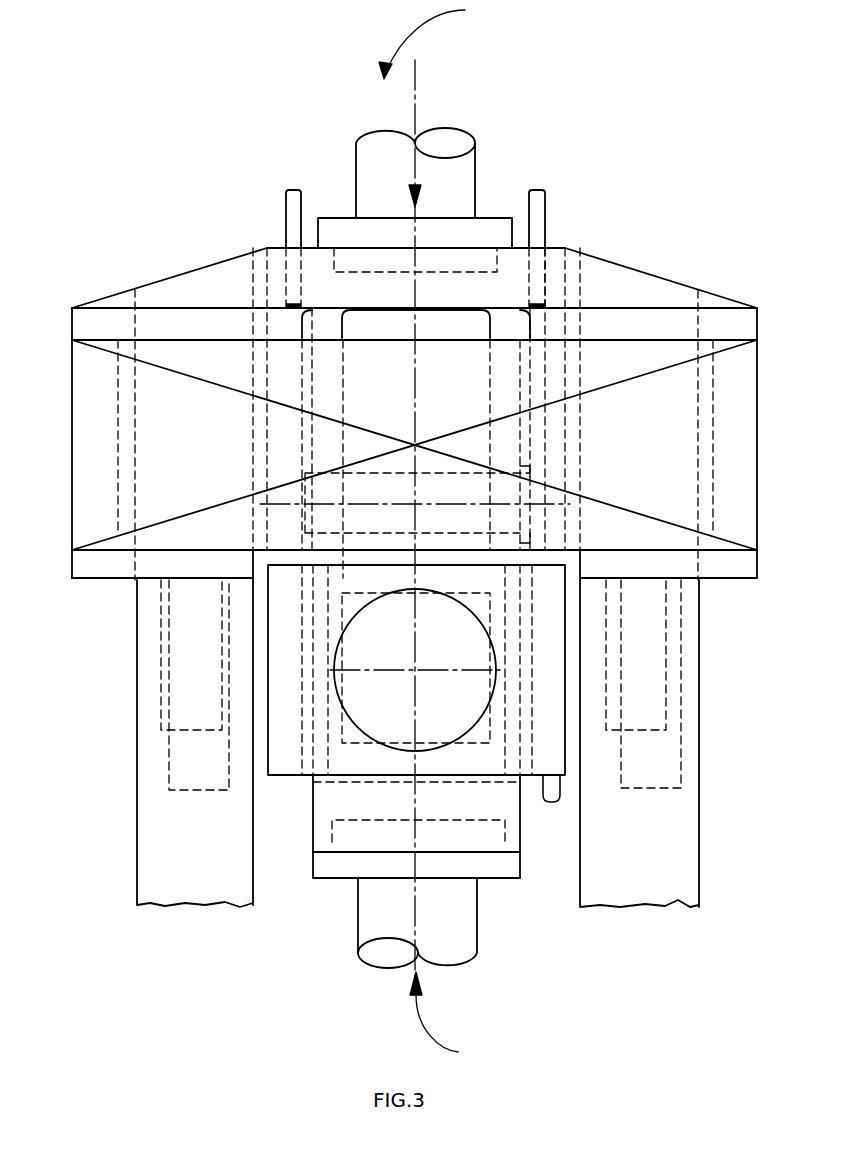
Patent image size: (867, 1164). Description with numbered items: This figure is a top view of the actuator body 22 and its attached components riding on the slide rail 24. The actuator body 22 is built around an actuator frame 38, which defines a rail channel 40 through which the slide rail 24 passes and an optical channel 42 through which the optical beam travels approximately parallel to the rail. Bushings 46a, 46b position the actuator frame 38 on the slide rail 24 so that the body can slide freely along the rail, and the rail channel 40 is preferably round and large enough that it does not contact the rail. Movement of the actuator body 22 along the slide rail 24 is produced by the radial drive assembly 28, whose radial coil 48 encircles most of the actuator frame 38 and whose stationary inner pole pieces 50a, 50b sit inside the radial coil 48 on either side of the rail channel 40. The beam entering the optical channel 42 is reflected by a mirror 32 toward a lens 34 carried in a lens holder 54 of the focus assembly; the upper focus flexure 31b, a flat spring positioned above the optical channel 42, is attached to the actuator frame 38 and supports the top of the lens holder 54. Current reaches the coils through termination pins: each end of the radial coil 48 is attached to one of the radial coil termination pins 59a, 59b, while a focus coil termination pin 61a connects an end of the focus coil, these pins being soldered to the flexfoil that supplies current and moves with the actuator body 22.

The actuator body 22 is at (710, 567).
The slide rail 24 is at (443, 150).
The radial drive assembly 28 is at (108, 268).
The upper focus flexure 31b is at (467, 327).
The mirror 32 is at (350, 737).
The lens 34 is at (552, 743).
The actuator frame 38 is at (157, 573).
The rail channel 40 is at (438, 532).
The optical channel 42 is at (413, 185).
The bushing 46a is at (333, 867).
The bushing 46b is at (347, 228).
The radial coil 48 is at (745, 400).
The inner pole piece 50a is at (662, 852).
The inner pole piece 50b is at (168, 878).
The lens holder 54 is at (282, 753).
The radial coil termination pin 59a is at (539, 188).
The radial coil termination pin 59b is at (284, 204).
The focus coil termination pin 61a is at (450, 715).